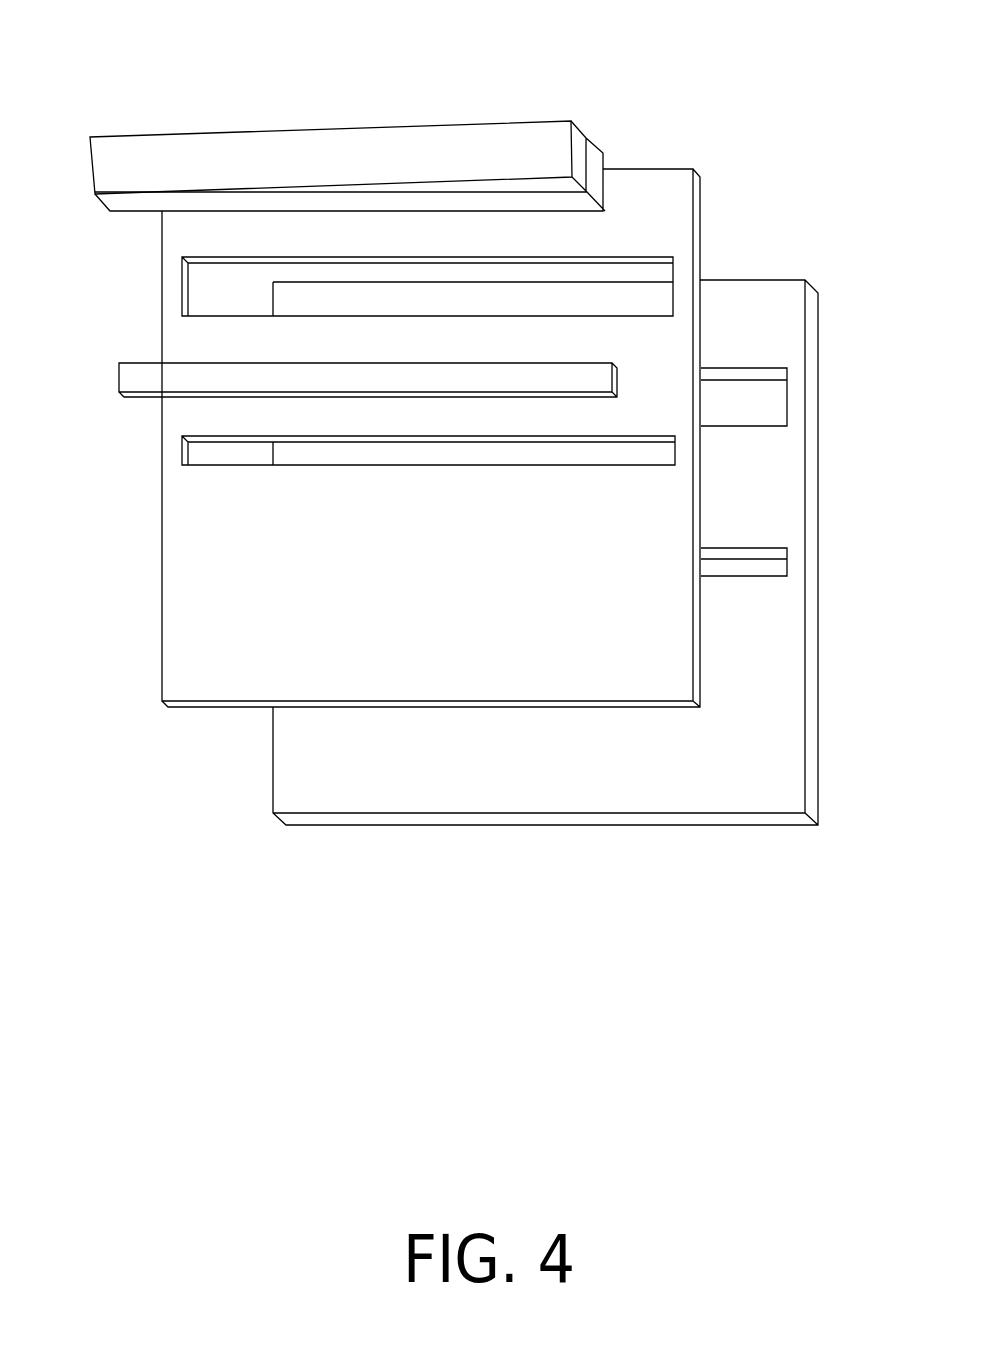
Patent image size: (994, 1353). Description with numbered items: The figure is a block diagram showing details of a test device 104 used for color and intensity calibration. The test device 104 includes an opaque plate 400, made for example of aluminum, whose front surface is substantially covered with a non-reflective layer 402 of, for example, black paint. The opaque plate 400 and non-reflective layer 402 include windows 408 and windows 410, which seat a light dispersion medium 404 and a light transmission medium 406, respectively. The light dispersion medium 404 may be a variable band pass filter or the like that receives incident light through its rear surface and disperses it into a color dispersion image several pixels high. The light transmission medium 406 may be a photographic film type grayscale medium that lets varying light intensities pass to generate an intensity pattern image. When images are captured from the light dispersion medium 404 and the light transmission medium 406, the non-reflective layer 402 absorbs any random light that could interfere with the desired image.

The test device 104 is at (782, 125).
The opaque plate 400 is at (295, 778).
The non-reflective layer 402 is at (682, 203).
The light dispersion medium 404 is at (98, 122).
The light transmission medium 406 is at (140, 377).
The windows 408 is at (198, 276).
The windows 410 is at (198, 454).